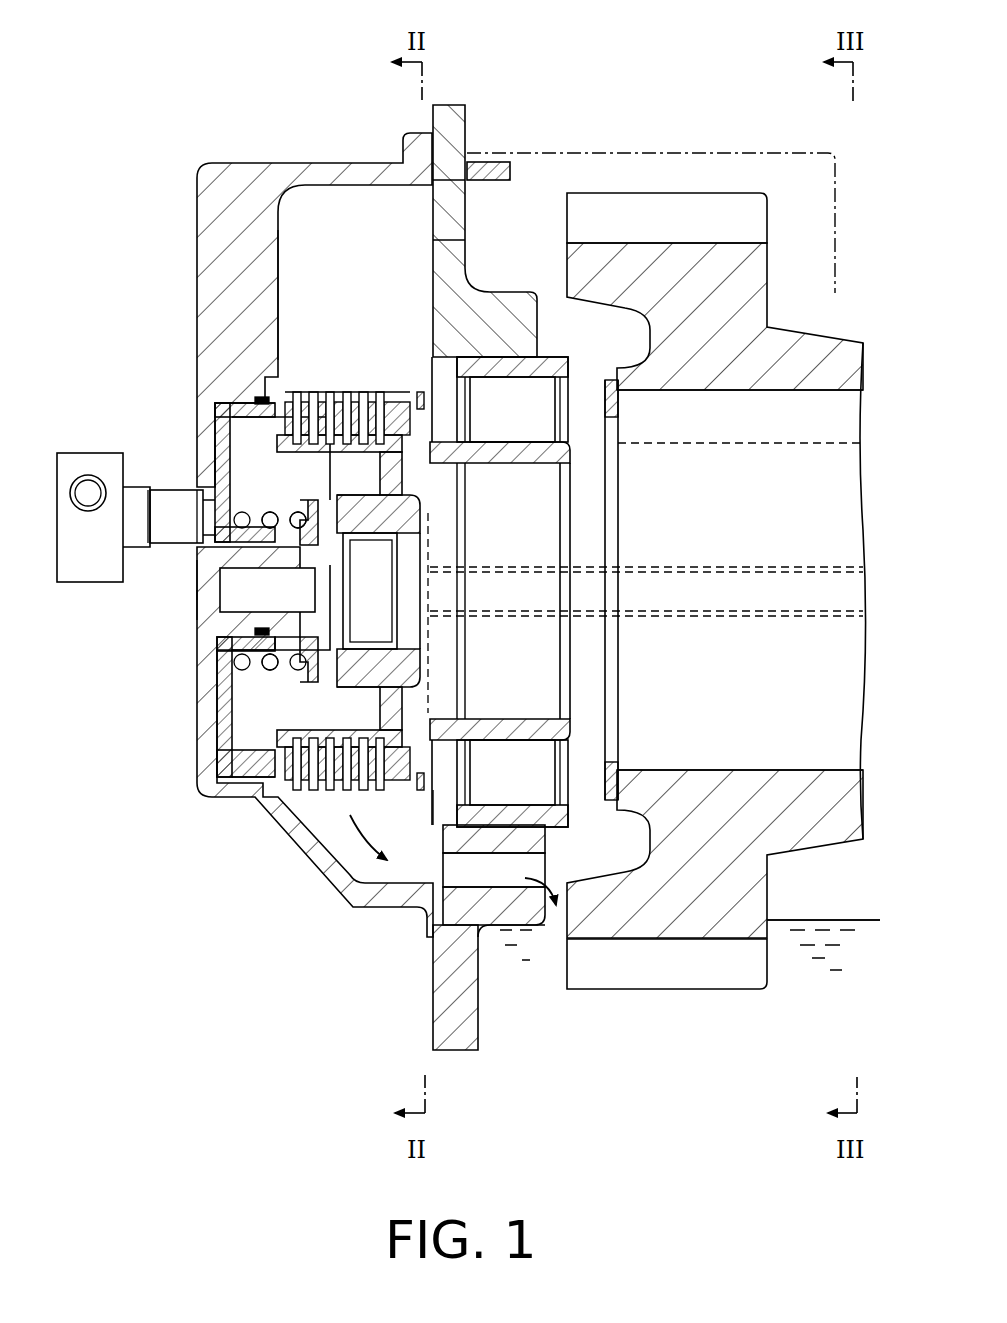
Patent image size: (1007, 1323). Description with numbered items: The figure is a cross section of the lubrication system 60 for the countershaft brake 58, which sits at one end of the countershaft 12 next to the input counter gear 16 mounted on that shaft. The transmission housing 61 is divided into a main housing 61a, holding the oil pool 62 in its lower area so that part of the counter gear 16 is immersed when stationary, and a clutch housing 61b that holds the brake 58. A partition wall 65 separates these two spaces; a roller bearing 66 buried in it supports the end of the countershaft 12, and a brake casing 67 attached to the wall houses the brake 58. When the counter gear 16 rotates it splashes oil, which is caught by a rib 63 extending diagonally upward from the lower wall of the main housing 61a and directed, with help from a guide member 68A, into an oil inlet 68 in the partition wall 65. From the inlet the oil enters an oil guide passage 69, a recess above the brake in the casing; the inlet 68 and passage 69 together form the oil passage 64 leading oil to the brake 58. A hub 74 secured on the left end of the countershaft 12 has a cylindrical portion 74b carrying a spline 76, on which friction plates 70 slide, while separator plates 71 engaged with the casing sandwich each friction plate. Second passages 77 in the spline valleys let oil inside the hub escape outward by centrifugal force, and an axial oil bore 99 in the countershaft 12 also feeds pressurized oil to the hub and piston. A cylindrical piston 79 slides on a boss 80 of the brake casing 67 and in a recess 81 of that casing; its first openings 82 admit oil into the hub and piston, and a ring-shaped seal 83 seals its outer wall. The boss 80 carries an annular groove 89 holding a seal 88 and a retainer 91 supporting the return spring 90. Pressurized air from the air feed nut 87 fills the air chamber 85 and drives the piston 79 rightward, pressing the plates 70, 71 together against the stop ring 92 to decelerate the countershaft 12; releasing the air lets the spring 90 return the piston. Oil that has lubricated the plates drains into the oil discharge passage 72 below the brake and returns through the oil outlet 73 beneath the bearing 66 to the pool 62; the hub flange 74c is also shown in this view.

The countershaft 12 is at (745, 690).
The input counter gear 16 is at (670, 990).
The countershaft brake 58 is at (358, 312).
The lubrication system 60 is at (315, 118).
The transmission housing 61 is at (680, 83).
The main housing 61a is at (832, 898).
The clutch housing 61b is at (212, 940).
The oil pool 62 is at (830, 1022).
The rib 63 is at (634, 153).
The oil passage 64 is at (300, 210).
The partition wall 65 is at (468, 1000).
The roller bearing 66 is at (522, 422).
The brake casing 67 is at (200, 440).
The oil inlet 68 is at (457, 228).
The guide member 68A is at (510, 160).
The oil guide passage 69 is at (492, 212).
The friction plates 70 is at (300, 400).
The separator plates 71 is at (330, 392).
The oil discharge passage 72 is at (435, 858).
The oil outlet 73 is at (500, 886).
The hub 74 is at (418, 682).
The cylindrical portion 74b is at (310, 430).
The hub flange 74c is at (448, 505).
The spline 76 is at (445, 470).
The second passages 77 is at (362, 448).
The cylindrical piston 79 is at (212, 462).
The boss 80 is at (205, 590).
The recess 81 is at (215, 403).
The first openings 82 is at (255, 402).
The ring-shaped seal 83 is at (228, 790).
The air chamber 85 is at (195, 538).
The air feed nut 87 is at (85, 468).
The seal 88 is at (340, 548).
The annular groove 89 is at (285, 568).
The return spring 90 is at (268, 672).
The retainer 91 is at (312, 672).
The stop ring 92 is at (420, 390).
The oil bore 99 is at (730, 572).